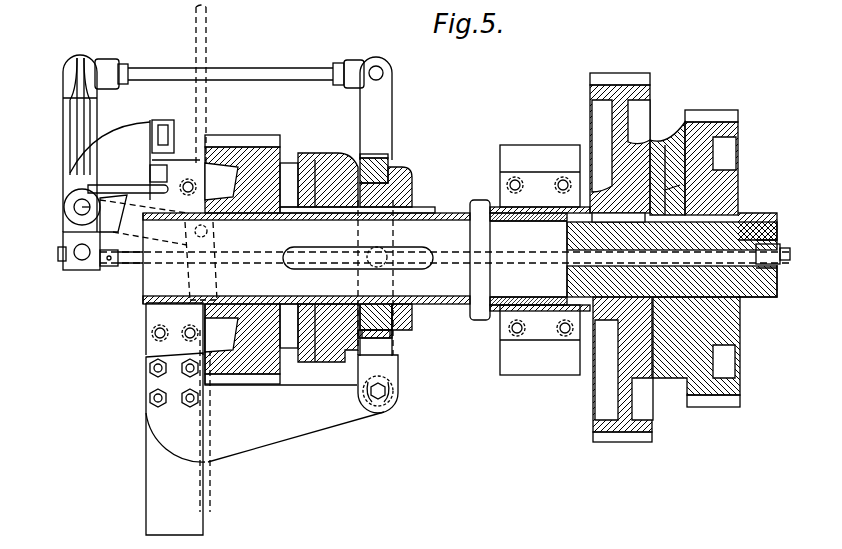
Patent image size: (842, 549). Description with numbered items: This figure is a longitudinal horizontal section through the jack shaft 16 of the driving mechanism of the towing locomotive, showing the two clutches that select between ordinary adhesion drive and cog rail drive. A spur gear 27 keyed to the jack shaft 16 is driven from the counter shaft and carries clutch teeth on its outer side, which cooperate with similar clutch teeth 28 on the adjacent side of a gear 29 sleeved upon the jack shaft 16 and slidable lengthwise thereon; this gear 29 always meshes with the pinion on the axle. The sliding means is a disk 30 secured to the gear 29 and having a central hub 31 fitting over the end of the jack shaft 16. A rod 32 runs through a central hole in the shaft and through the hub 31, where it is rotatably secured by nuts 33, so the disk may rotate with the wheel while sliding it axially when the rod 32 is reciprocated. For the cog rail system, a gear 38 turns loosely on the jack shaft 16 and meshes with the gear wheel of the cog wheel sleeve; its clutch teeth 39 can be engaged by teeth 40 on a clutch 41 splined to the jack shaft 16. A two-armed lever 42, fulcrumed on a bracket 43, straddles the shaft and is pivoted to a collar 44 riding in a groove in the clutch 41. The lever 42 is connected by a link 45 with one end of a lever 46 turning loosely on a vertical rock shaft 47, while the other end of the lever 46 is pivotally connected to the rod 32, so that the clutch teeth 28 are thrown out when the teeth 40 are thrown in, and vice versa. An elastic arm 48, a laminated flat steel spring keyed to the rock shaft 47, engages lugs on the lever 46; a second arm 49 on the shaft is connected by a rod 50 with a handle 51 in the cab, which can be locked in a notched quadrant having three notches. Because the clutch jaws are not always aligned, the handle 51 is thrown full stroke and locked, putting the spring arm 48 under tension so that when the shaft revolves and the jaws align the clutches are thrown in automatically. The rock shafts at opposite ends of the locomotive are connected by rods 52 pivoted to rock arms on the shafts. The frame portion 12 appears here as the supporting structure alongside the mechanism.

The frame bracket 12 is at (152, 505).
The jack shaft 16 is at (453, 300).
The spur gear 27 is at (590, 90).
The clutch teeth 28 is at (658, 143).
The gear 29 is at (738, 125).
The disk 30 is at (738, 180).
The central hub 31 is at (755, 222).
The rod 32 is at (140, 264).
The nuts 33 is at (770, 266).
The gear 38 is at (258, 382).
The clutch teeth 39 is at (288, 163).
The clutch teeth 40 is at (312, 153).
The clutch 41 is at (410, 180).
The two-armed lever 42 is at (386, 118).
The bracket 43 is at (287, 432).
The collar 44 is at (390, 166).
The link 45 is at (281, 72).
The lever 46 is at (63, 127).
The vertical rock shaft 47 is at (74, 207).
The elastic arm 48 is at (70, 150).
The second arm 49 is at (112, 200).
The rod 50 is at (206, 115).
The handle 51 is at (65, 245).
The rods 52 is at (211, 495).